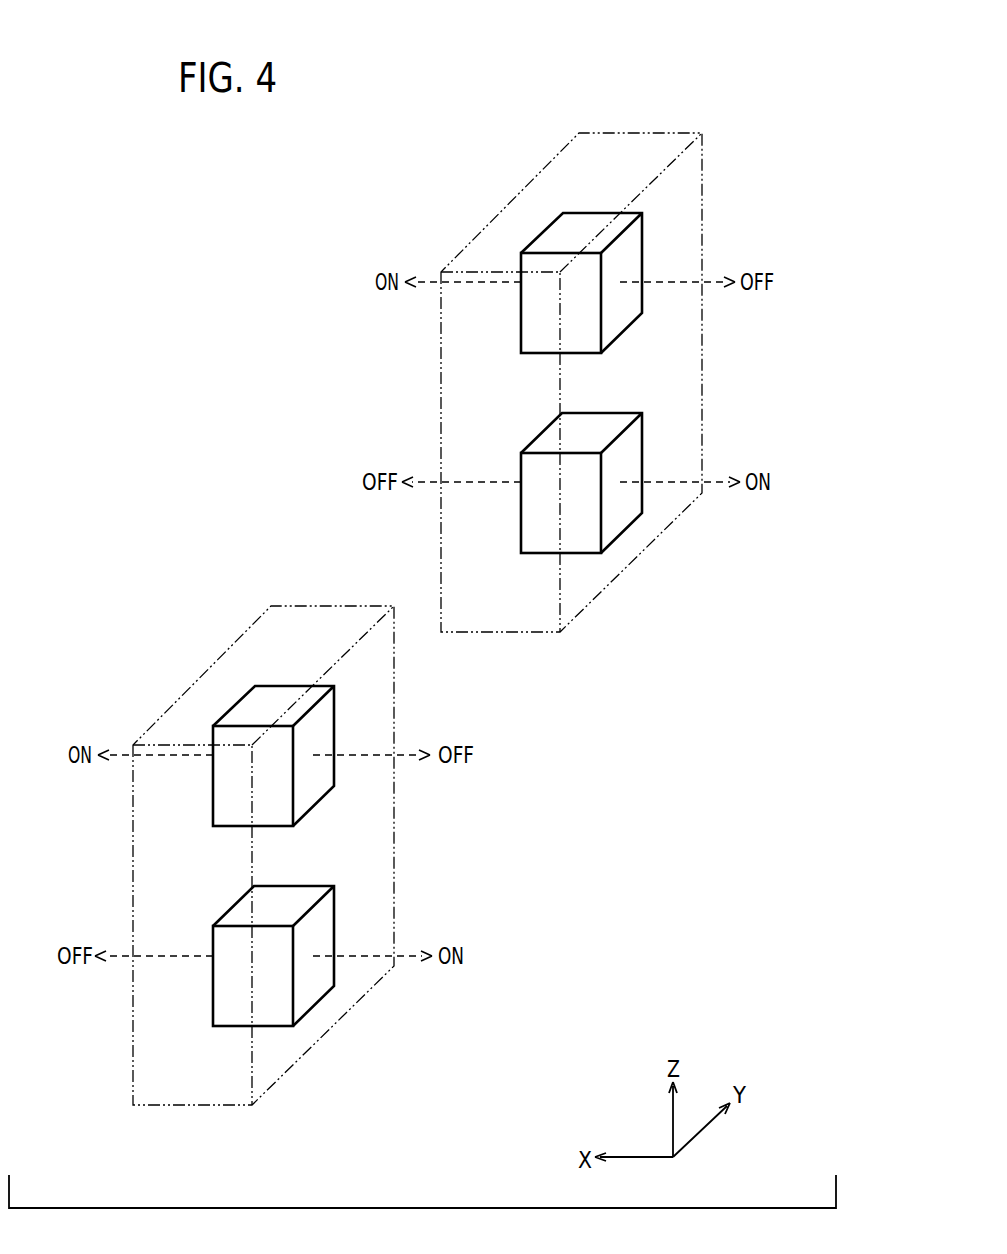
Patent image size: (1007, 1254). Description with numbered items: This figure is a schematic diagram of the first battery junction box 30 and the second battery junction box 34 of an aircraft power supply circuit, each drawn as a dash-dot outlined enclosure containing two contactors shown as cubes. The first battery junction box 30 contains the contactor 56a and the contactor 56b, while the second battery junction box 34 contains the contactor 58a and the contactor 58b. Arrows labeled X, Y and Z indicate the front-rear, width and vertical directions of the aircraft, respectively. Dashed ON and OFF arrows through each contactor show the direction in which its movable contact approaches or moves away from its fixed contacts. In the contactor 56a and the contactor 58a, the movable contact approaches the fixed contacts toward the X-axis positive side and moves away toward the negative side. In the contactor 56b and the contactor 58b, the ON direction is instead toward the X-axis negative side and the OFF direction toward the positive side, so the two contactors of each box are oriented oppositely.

The first battery junction box 30 is at (329, 606).
The second battery junction box 34 is at (637, 133).
The contactor 56a is at (213, 798).
The contactor 56b is at (224, 915).
The contactor 58a is at (521, 325).
The contactor 58b is at (532, 442).